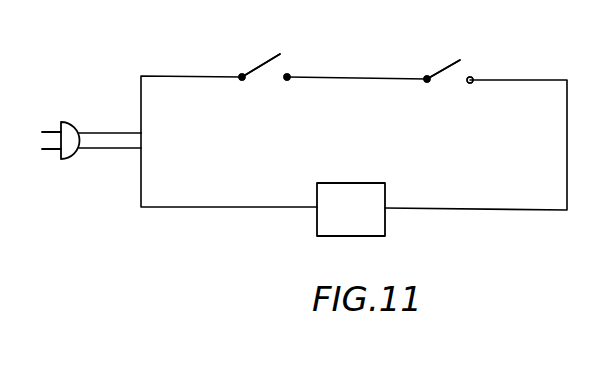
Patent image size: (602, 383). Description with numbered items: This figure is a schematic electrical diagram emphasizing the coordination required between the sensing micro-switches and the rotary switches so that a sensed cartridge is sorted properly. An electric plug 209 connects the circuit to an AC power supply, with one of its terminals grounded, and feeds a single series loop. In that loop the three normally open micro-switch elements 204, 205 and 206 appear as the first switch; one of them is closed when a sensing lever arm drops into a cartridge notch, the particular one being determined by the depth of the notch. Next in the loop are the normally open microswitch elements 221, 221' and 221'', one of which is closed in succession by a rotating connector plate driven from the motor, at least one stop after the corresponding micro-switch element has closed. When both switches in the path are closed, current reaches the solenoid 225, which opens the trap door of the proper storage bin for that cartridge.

The electric plug 209 is at (66, 124).
The micro-switch element 204 is at (293, 53).
The micro-switch element 205 is at (284, 52).
The micro-switch element 206 is at (306, 52).
The normally open microswitch element 221 is at (445, 53).
The normally open microswitch element 221' is at (472, 54).
The normally open microswitch element 221'' is at (495, 54).
The solenoid 225 is at (370, 228).